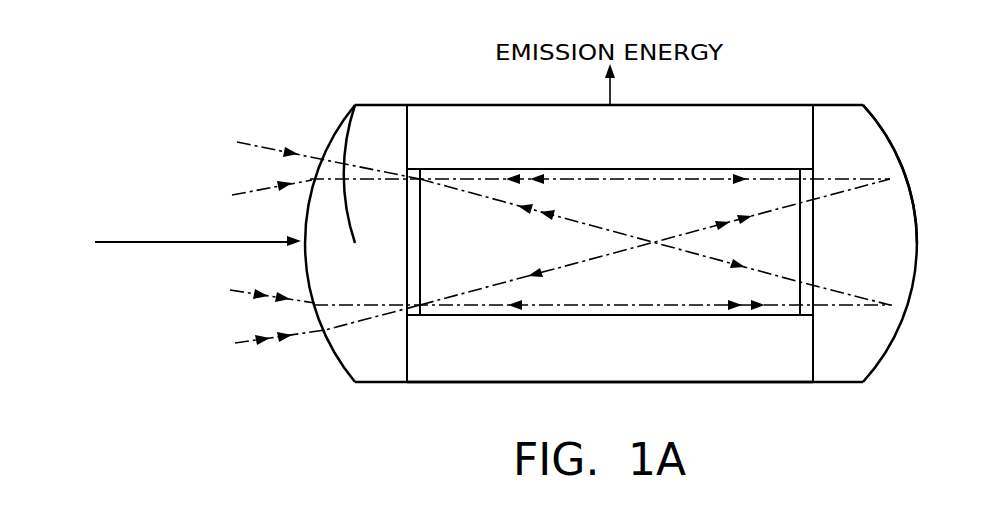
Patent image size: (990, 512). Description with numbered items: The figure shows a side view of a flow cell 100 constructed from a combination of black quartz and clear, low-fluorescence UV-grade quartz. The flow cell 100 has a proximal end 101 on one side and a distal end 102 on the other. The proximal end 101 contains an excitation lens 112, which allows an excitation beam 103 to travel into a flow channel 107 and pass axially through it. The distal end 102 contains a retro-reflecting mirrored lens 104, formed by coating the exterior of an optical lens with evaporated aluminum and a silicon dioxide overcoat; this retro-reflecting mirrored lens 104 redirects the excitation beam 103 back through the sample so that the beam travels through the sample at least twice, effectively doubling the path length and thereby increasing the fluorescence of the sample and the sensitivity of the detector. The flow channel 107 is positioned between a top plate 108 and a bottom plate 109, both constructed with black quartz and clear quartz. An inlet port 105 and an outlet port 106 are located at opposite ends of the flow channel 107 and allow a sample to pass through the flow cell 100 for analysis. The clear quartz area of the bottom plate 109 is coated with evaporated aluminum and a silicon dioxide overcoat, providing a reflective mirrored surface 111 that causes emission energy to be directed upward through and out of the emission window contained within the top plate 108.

The flow cell 100 is at (744, 72).
The proximal end 101 is at (340, 363).
The distal end 102 is at (893, 351).
The excitation beam 103 is at (278, 244).
The retro-reflecting mirrored lens 104 is at (885, 142).
The inlet port 105 is at (407, 238).
The outlet port 106 is at (813, 243).
The flow channel 107 is at (561, 243).
The top plate 108 is at (790, 125).
The bottom plate 109 is at (738, 368).
The reflective mirrored surface 111 is at (606, 384).
The excitation lens 112 is at (352, 122).